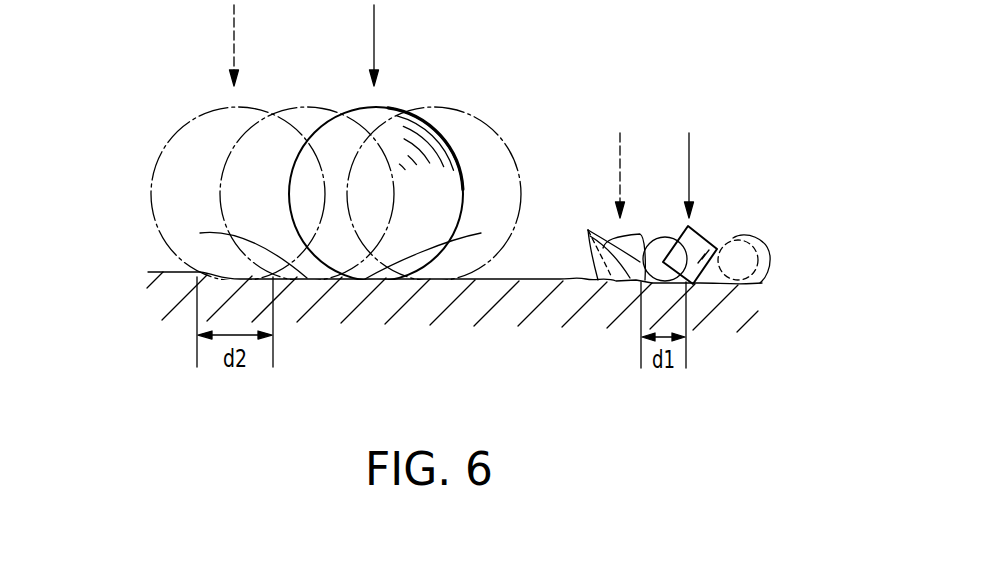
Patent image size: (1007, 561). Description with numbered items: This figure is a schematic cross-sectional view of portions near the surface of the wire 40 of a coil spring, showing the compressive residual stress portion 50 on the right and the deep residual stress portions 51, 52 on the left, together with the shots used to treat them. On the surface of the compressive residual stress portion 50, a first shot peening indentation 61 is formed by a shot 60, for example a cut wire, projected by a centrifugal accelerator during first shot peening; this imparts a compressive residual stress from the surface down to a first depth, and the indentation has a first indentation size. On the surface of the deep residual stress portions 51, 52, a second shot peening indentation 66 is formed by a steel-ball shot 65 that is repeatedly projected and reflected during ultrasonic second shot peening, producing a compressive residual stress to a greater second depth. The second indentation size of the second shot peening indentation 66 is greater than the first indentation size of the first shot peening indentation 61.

The wire 40 is at (161, 272).
The compressive residual stress portion 50 is at (712, 288).
The deep residual stress portion 51 is at (322, 287).
The deep residual stress portion 52 is at (540, 304).
The shot 60 is at (640, 233).
The first shot peening indentation 61 is at (606, 241).
The steel-ball shot 65 is at (396, 107).
The second shot peening indentation 66 is at (230, 277).